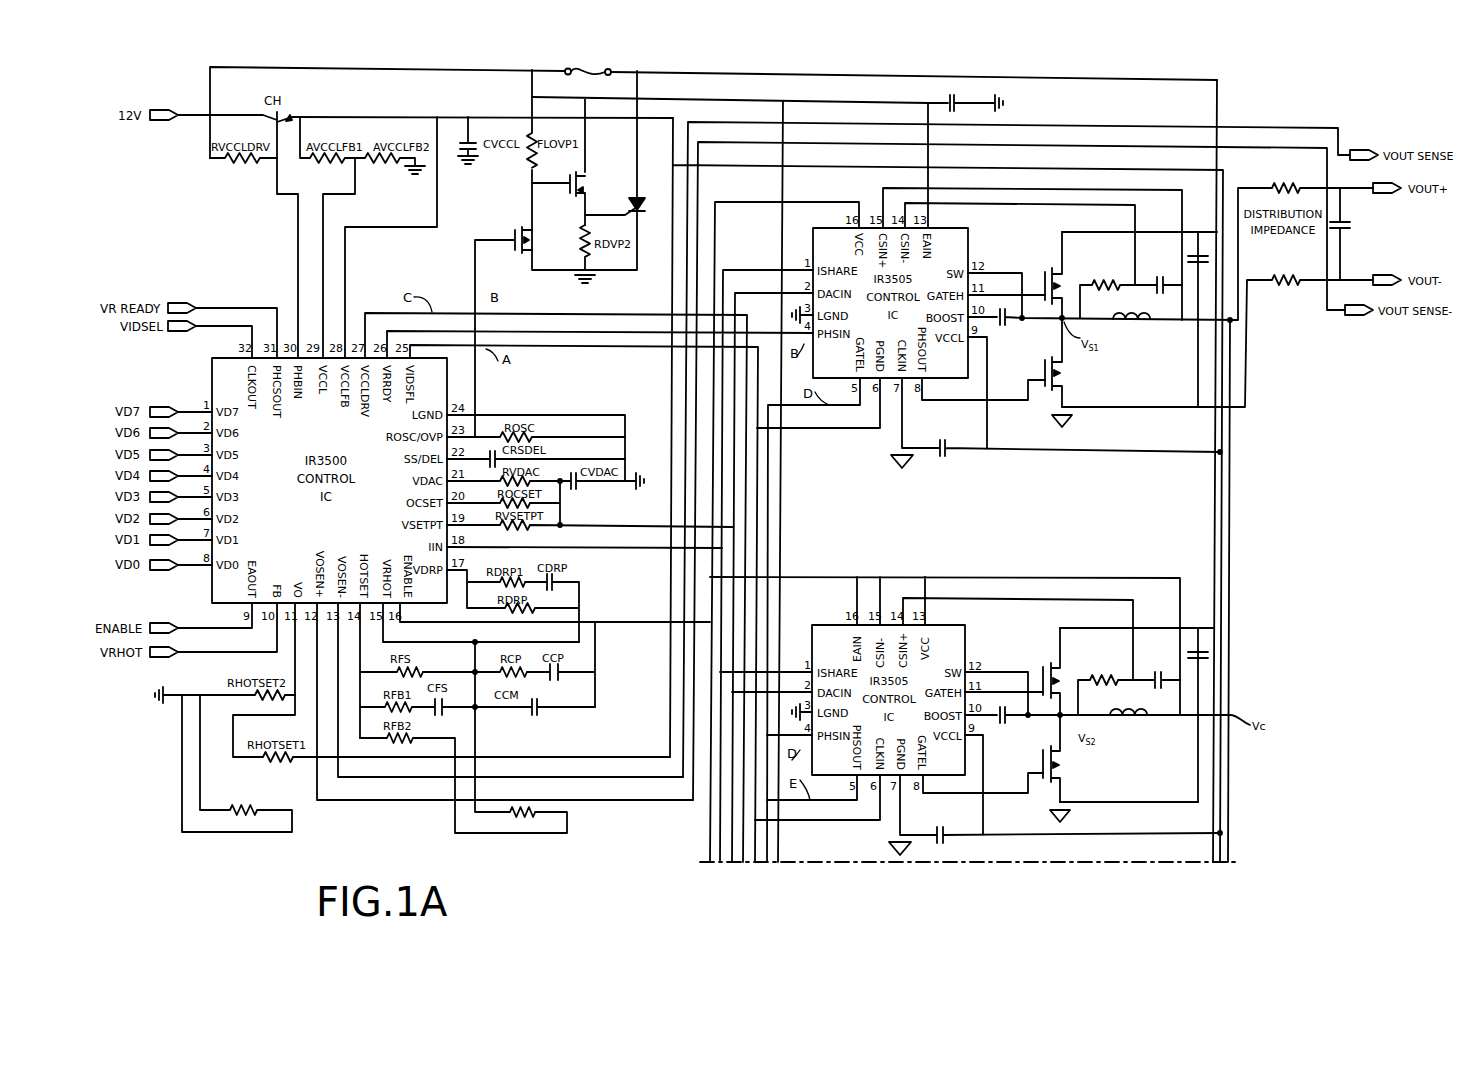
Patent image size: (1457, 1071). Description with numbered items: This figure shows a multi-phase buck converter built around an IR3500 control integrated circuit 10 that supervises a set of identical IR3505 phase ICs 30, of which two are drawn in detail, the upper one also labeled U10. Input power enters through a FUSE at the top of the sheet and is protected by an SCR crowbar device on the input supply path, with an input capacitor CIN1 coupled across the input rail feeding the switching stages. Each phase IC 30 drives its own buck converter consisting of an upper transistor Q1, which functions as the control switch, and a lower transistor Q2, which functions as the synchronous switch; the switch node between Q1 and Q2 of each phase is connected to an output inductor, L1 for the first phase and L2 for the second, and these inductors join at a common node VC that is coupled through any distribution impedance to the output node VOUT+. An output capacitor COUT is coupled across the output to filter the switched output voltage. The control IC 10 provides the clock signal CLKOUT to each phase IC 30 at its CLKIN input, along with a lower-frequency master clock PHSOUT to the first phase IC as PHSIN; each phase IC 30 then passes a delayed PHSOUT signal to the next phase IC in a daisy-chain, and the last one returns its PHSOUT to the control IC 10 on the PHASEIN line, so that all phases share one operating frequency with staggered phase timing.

The control integrated circuit 10 is at (212, 372).
The phase IC 30 is at (897, 492).
The IR3505 phase IC U10 is at (878, 303).
The control switch transistor Q1 is at (1045, 473).
The synchronous switch transistor Q2 is at (1044, 560).
The output inductor L1 is at (1135, 322).
The output inductor L2 is at (1132, 718).
The input capacitor CIN1 is at (1196, 307).
The output capacitor COUT is at (1358, 234).
The silicon controlled rectifier SCR is at (624, 197).
The fuse FUSE is at (588, 63).